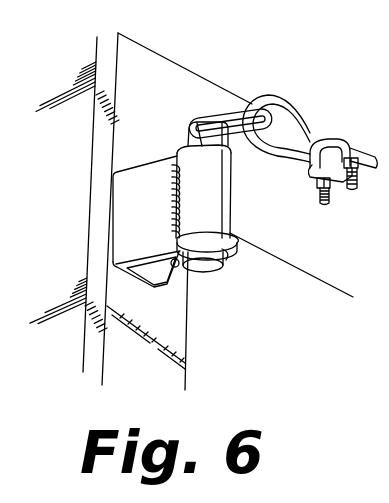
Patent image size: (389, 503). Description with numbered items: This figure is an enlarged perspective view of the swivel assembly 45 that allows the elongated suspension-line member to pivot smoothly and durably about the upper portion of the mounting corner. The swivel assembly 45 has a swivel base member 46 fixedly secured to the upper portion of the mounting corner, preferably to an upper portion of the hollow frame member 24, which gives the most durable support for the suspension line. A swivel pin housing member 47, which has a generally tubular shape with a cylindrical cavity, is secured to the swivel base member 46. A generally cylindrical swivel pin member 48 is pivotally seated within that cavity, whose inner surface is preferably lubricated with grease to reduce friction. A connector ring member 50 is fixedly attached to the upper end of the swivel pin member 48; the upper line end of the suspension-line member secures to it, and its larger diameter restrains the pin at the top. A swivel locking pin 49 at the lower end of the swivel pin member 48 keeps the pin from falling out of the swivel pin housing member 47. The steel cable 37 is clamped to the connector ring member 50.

The hollow frame member 24 is at (125, 346).
The cable 37 is at (302, 120).
The swivel assembly 45 is at (80, 191).
The swivel base member 46 is at (134, 218).
The swivel pin housing member 47 is at (207, 193).
The swivel pin member 48 is at (188, 142).
The swivel locking pin 49 is at (223, 256).
The connector ring member 50 is at (222, 116).